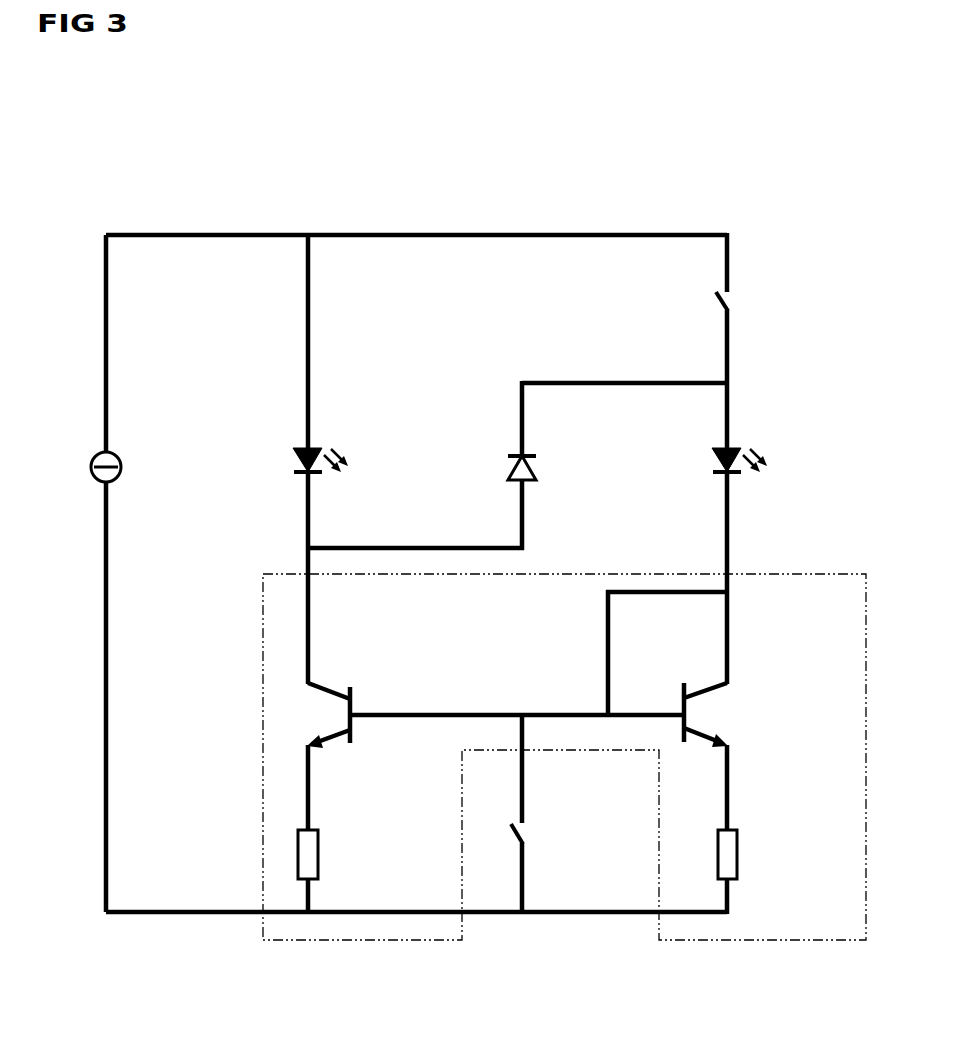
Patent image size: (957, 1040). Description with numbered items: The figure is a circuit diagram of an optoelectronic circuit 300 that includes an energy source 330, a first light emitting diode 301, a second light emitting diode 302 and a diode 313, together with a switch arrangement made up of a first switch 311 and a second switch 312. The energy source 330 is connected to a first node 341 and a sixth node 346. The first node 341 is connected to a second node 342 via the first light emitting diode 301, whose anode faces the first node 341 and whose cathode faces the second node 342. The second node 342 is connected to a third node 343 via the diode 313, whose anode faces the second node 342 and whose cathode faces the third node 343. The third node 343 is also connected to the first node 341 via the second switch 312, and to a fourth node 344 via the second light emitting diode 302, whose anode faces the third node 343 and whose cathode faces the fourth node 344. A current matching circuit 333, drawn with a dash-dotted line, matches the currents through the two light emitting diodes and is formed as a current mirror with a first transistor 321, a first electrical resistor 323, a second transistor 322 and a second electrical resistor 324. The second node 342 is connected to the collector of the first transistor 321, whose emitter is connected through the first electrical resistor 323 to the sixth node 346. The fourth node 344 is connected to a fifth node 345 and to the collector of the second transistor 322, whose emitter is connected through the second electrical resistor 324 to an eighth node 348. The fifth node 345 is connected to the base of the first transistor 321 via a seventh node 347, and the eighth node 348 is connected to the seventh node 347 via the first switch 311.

The optoelectronic circuit 300 is at (637, 178).
The energy source 330 is at (117, 456).
The first node 341 is at (311, 238).
The first light emitting diode 301 is at (318, 452).
The second switch 312 is at (728, 306).
The third node 343 is at (726, 381).
The diode 313 is at (536, 479).
The second light emitting diode 302 is at (741, 452).
The second node 342 is at (311, 552).
The fourth node 344 is at (729, 594).
The first transistor 321 is at (333, 690).
The fifth node 345 is at (612, 712).
The second transistor 322 is at (700, 729).
The seventh node 347 is at (523, 718).
The first switch 311 is at (524, 838).
The eighth node 348 is at (524, 914).
The sixth node 346 is at (310, 914).
The first electrical resistor 323 is at (319, 851).
The second electrical resistor 324 is at (739, 872).
The current matching circuit 333 is at (262, 942).